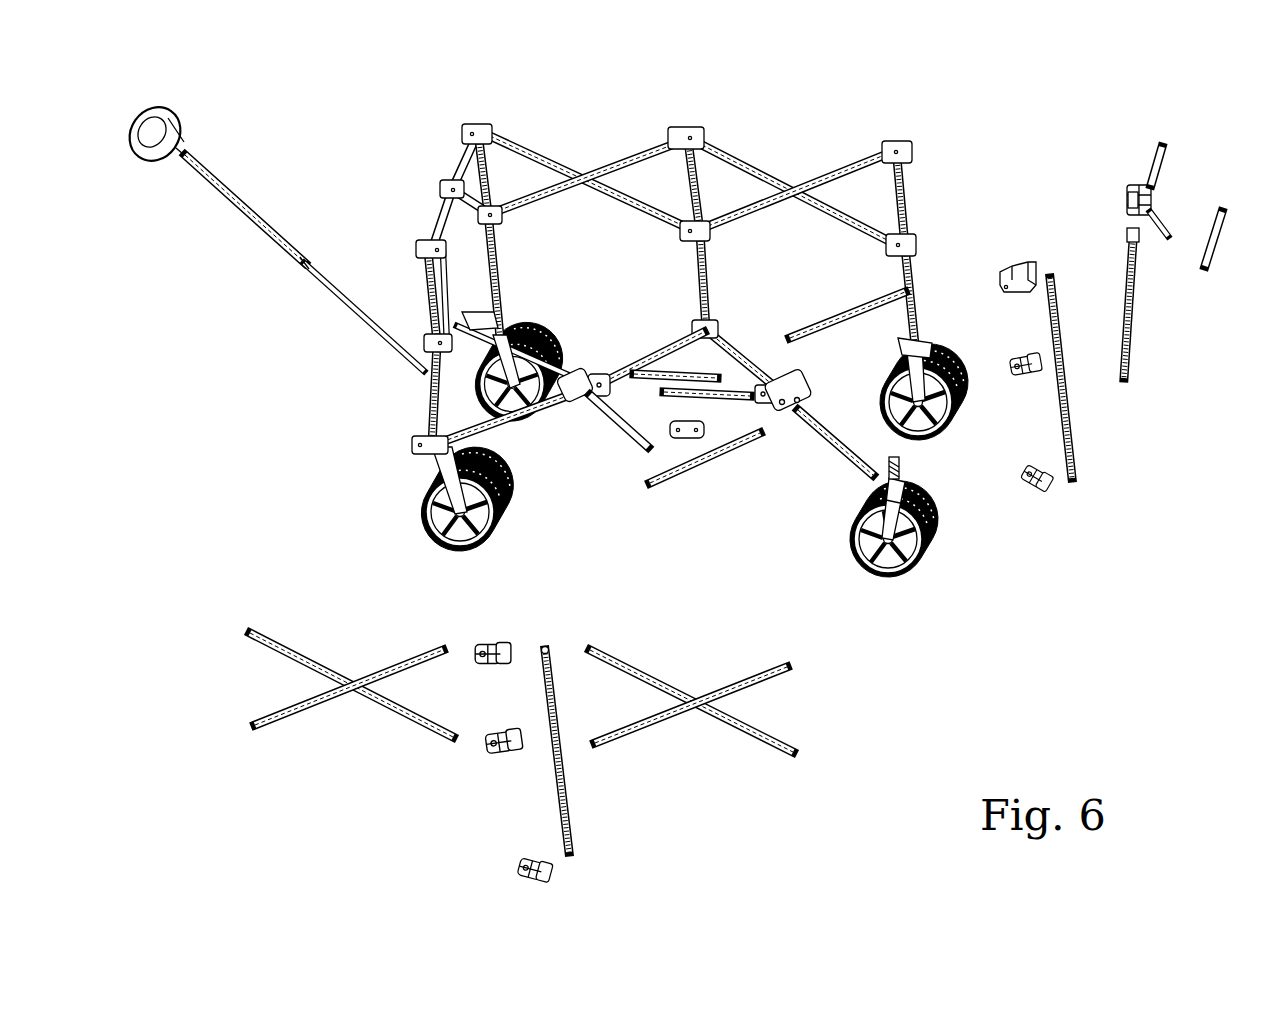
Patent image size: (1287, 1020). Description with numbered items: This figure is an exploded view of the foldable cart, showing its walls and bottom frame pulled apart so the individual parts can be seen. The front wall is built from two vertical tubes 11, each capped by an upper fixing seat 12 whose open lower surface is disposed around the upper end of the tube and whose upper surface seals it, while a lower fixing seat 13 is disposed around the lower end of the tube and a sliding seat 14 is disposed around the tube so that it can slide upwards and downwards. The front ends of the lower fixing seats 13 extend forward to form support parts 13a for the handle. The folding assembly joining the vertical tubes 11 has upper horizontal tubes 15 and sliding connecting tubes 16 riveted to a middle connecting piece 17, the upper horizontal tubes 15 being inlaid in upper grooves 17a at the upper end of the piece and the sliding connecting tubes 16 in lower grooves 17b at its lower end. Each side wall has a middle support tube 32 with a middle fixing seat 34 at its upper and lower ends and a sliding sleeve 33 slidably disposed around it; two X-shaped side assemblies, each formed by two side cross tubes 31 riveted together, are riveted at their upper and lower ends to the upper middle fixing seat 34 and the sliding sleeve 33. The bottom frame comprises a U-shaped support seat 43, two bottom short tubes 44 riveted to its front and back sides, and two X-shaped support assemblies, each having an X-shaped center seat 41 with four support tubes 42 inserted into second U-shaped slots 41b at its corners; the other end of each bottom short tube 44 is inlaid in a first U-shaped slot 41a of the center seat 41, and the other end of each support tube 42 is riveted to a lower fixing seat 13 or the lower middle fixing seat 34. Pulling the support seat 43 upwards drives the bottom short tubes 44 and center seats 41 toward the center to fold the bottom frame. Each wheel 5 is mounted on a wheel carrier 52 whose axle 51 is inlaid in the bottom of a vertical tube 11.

The wheel 5 is at (896, 582).
The vertical tube 11 is at (1073, 380).
The upper fixing seat 12 is at (1025, 258).
The lower fixing seat 13 is at (1041, 497).
The support part 13a is at (425, 452).
The sliding seat 14 is at (1026, 382).
The upper horizontal tube 15 is at (1186, 167).
The sliding connecting tube 16 is at (1181, 312).
The middle connecting piece 17 is at (1131, 181).
The upper groove 17a is at (1128, 197).
The lower groove 17b is at (1130, 232).
The side cross tube 31 is at (340, 702).
The middle support tube 32 is at (565, 768).
The sliding sleeve 33 is at (490, 757).
The middle fixing seat 34 is at (480, 638).
The center seat 41 is at (578, 400).
The first U-shaped slot 41a is at (600, 373).
The second U-shaped slot 41b is at (797, 412).
The support tube 42 is at (640, 345).
The support seat 43 is at (690, 442).
The bottom short tube 44 is at (712, 368).
The axle 51 is at (901, 462).
The wheel carrier 52 is at (908, 485).